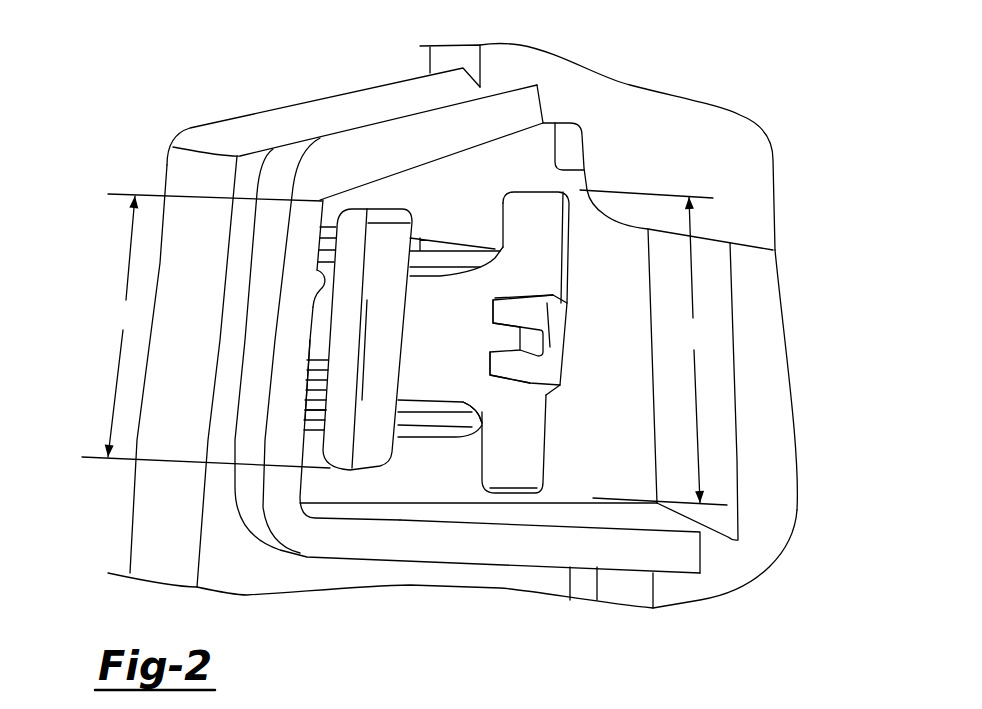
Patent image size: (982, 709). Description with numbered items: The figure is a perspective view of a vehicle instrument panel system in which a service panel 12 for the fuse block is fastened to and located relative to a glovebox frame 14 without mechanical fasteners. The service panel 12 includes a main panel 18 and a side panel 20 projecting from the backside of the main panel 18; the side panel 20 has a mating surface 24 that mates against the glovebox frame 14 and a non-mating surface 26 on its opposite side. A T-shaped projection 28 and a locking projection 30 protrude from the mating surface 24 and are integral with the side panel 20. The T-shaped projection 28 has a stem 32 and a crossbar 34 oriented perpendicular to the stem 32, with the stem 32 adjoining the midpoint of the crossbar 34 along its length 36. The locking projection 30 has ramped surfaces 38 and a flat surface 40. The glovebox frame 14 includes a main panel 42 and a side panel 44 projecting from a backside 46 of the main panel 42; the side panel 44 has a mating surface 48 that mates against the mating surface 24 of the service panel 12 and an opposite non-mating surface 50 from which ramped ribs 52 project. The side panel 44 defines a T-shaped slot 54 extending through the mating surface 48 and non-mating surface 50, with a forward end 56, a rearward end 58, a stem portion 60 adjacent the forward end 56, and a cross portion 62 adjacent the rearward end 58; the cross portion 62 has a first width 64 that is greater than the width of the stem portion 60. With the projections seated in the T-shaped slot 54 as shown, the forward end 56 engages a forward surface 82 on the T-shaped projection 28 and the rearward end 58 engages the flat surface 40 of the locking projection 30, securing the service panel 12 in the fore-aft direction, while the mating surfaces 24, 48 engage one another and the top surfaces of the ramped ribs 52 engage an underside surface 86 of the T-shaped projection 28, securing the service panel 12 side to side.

The service panel 12 is at (178, 127).
The glovebox frame 14 is at (280, 155).
The main panel 18 is at (455, 50).
The side panel 20 is at (430, 298).
The mating surface 24 is at (226, 573).
The non-mating surface 26 is at (128, 514).
The T-shaped projection 28 is at (343, 213).
The locking projection 30 is at (545, 392).
The stem 32 is at (325, 340).
The crossbar 34 is at (387, 340).
The length 36 is at (206, 331).
The ramped surfaces 38 is at (493, 370).
The flat surface 40 is at (570, 337).
The main panel 42 is at (769, 350).
The side panel 44 is at (415, 483).
The backside 46 is at (767, 393).
The mating surface 48 is at (413, 103).
The non-mating surface 50 is at (609, 399).
The ramped ribs 52 is at (420, 238).
The T-shaped slot 54 is at (479, 406).
The forward end 56 is at (317, 302).
The rearward end 58 is at (560, 225).
The stem portion 60 is at (428, 277).
The cross portion 62 is at (537, 492).
The first width 64 is at (653, 347).
The forward surface 82 is at (327, 386).
The underside surface 86 is at (308, 383).